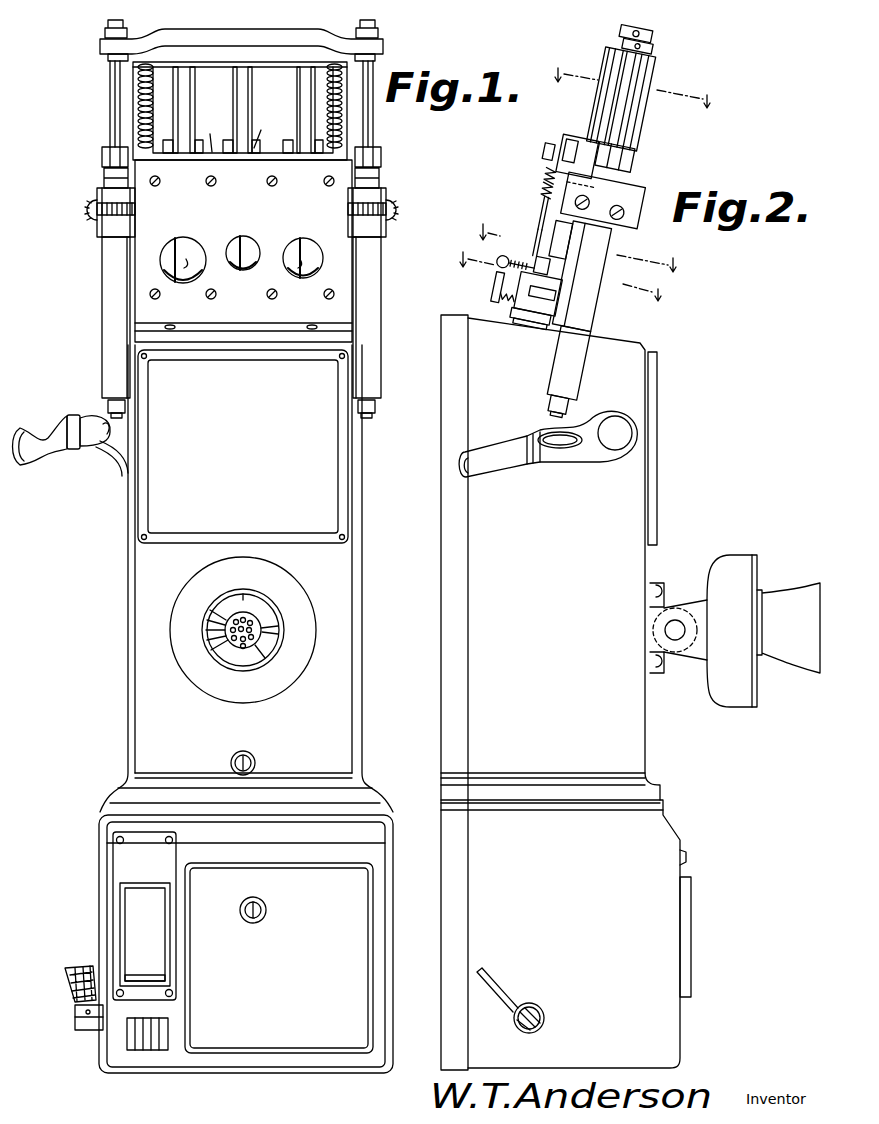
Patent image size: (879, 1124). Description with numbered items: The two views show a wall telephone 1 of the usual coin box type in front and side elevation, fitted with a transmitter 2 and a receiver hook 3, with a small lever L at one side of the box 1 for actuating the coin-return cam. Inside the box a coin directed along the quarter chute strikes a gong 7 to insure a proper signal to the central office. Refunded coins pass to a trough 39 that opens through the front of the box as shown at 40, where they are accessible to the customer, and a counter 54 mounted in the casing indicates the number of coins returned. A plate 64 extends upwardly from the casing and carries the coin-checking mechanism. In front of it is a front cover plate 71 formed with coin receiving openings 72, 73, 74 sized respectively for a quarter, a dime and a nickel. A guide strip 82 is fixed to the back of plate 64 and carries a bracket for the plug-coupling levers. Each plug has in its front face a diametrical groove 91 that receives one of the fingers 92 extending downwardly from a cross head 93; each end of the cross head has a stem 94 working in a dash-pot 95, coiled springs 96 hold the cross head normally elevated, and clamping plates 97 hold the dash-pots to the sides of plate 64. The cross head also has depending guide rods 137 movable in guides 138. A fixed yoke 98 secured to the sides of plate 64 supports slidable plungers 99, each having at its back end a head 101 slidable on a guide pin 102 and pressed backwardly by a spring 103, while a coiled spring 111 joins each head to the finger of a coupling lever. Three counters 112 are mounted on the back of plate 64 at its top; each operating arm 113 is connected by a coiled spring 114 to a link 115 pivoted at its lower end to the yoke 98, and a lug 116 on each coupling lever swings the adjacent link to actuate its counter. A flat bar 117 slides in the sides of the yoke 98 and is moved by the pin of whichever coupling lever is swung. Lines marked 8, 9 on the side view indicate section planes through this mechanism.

In FIG. 1, the telephone 1 is at (347, 748).
In FIG. 2, the telephone 1 is at (636, 753).
In FIG. 1, the transmitter 2 is at (245, 702).
In FIG. 2, the transmitter 2 is at (743, 694).
In FIG. 1, the receiver hook 3 is at (108, 449).
In FIG. 2, the receiver hook 3 is at (514, 461).
In FIG. 2, the gong 7 is at (633, 87).
In FIG. 2, the section line 8- 8 is at (575, 250).
In FIG. 2, the section line 9- 9 is at (561, 277).
In FIG. 1, the trough 39 is at (160, 975).
In FIG. 1, the front opening 40 is at (140, 912).
In FIG. 1, the counter 54 is at (147, 1050).
In FIG. 1, the plate 64 is at (208, 130).
In FIG. 1, the front cover plate 71 is at (143, 267).
In FIG. 2, the front cover plate 71 is at (602, 249).
In FIG. 1, the coin receiving opening 72 is at (181, 237).
In FIG. 1, the coin receiving opening 73 is at (245, 236).
In FIG. 1, the coin receiving opening 74 is at (303, 238).
In FIG. 2, the guide strip 82 is at (568, 267).
In FIG. 1, the diametrical groove 91 is at (293, 264).
In FIG. 1, the fingers 92 is at (183, 90).
In FIG. 2, the fingers 92 is at (628, 136).
In FIG. 1, the cross head 93 is at (278, 47).
In FIG. 2, the cross head 93 is at (652, 45).
In FIG. 1, the stem 94 is at (110, 103).
In FIG. 2, the stem 94 is at (630, 76).
In FIG. 1, the dash-pot 95 is at (110, 315).
In FIG. 2, the dash-pot 95 is at (572, 373).
In FIG. 1, the coiled springs 96 is at (136, 80).
In FIG. 1, the clamping plates 97 is at (96, 230).
In FIG. 2, the clamping plates 97 is at (628, 193).
In FIG. 2, the fixed yoke 98 is at (535, 322).
In FIG. 2, the plungers 99 is at (510, 262).
In FIG. 2, the head 101 is at (494, 279).
In FIG. 2, the guide pin 102 is at (490, 296).
In FIG. 2, the spring 103 is at (505, 309).
In FIG. 2, the coiled spring 111 is at (530, 242).
In FIG. 1, the counter 112 is at (274, 128).
In FIG. 2, the counter 112 is at (580, 146).
In FIG. 2, the operating arm 113 is at (550, 160).
In FIG. 2, the coiled spring 114 is at (545, 177).
In FIG. 2, the link 115 is at (547, 194).
In FIG. 2, the lug 116 is at (542, 208).
In FIG. 2, the flat bar 117 is at (565, 294).
In FIG. 2, the guide rods 137 is at (613, 67).
In FIG. 1, the guides 138 is at (108, 138).
In FIG. 2, the guides 138 is at (594, 135).
In FIG. 1, the lever L is at (72, 983).
In FIG. 2, the lever L is at (503, 990).